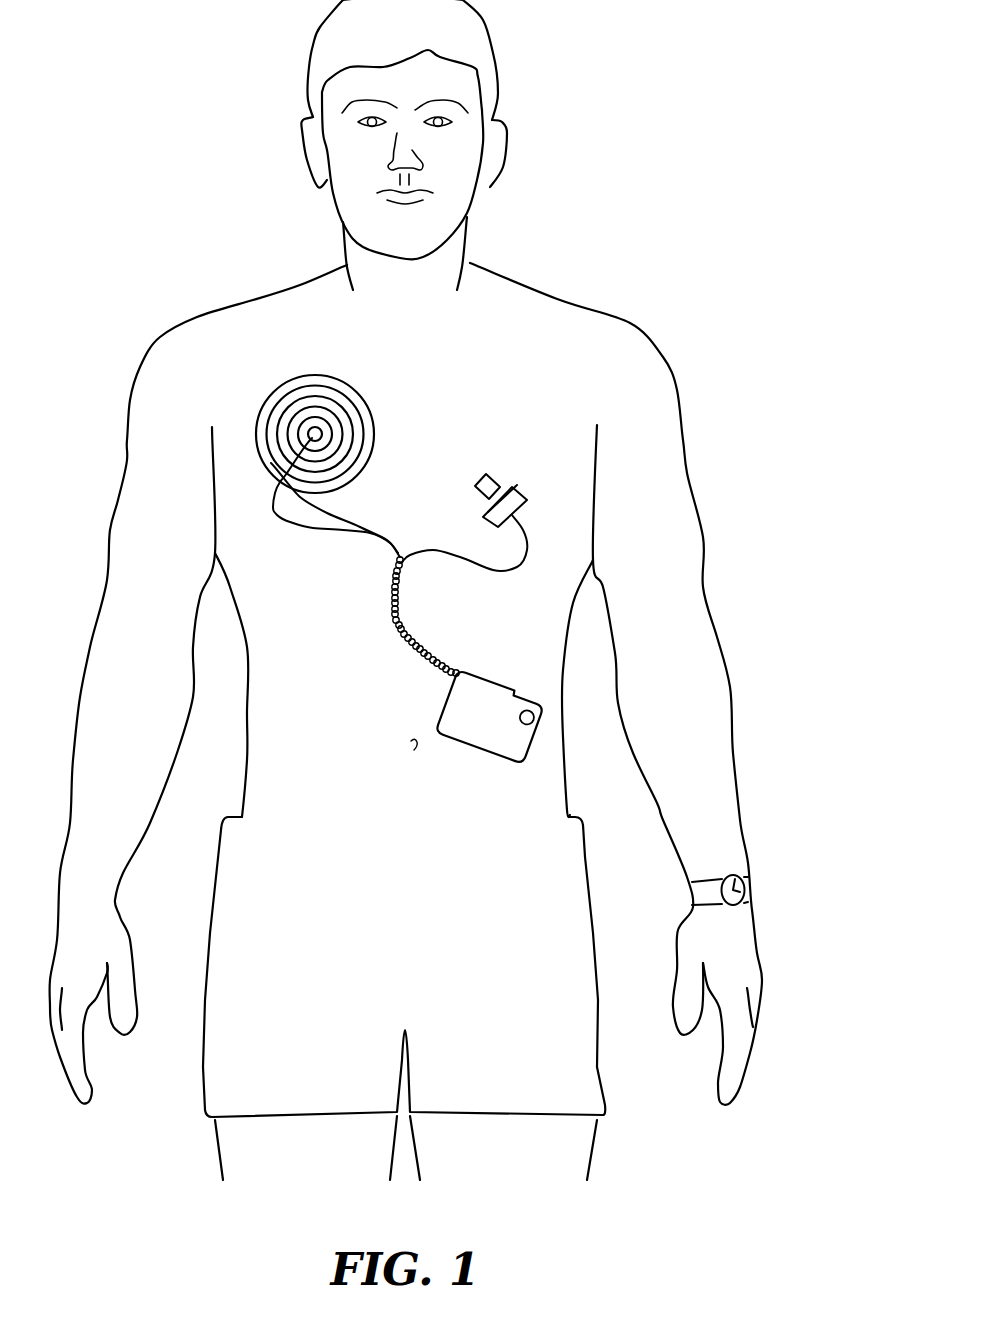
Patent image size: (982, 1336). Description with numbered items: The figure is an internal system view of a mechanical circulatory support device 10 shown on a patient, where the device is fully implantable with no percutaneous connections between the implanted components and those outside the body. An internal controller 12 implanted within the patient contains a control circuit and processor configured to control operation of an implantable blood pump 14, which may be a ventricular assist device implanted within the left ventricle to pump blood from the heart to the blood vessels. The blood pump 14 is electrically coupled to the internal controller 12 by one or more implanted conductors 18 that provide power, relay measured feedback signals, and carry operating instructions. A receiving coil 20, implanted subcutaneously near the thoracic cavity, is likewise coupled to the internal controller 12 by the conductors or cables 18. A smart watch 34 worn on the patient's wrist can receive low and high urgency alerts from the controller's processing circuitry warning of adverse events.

The mechanical circulatory support device 10 is at (438, 420).
The internal controller 12 is at (600, 694).
The implantable blood pump 14 is at (518, 482).
The implanted conductors 18 is at (322, 507).
The receiving coil 20 is at (269, 402).
The smart watch 34 is at (753, 887).